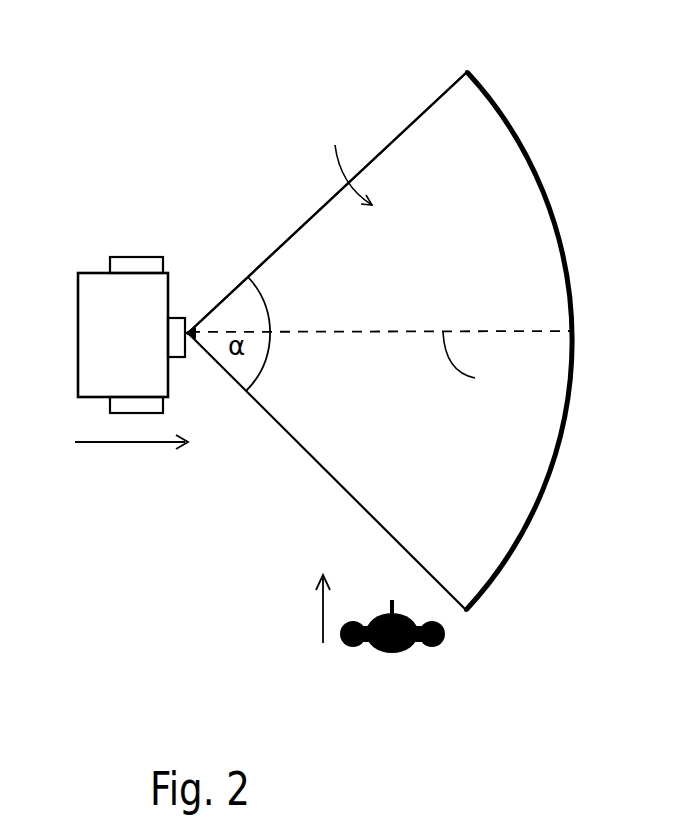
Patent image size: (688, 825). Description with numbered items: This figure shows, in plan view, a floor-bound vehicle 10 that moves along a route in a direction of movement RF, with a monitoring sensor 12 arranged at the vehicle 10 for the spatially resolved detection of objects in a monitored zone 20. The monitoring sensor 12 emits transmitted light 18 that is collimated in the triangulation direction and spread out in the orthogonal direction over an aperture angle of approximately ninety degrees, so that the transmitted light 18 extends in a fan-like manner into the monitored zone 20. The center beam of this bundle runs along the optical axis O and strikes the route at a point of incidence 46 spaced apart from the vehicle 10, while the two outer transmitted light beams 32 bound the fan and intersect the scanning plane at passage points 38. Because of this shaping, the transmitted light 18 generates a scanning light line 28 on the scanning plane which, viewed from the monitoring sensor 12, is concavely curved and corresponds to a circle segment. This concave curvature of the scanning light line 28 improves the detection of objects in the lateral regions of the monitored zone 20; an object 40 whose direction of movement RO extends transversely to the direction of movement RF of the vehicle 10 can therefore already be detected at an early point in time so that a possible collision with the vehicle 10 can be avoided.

The floor-bound vehicle 10 is at (100, 332).
The monitoring sensor 12 is at (178, 332).
The transmitted light 18 is at (287, 266).
The monitored zone 20 is at (345, 157).
The scanning light line 28 is at (562, 237).
The outer transmitted light beams 32 is at (400, 130).
The passage points 38 is at (469, 70).
The object 40 is at (412, 648).
The point of incidence 46 is at (575, 320).
The optical axis O is at (473, 365).
The direction of movement of the vehicle RF is at (119, 446).
The direction of movement of the object RO is at (320, 608).